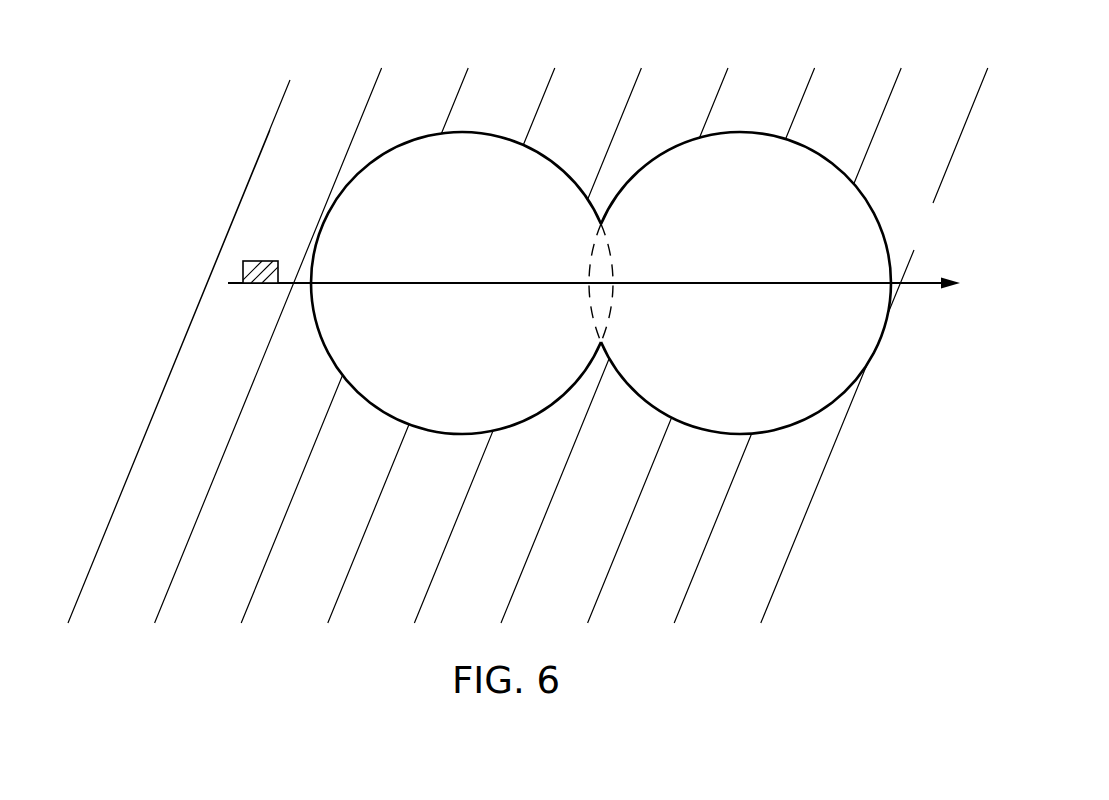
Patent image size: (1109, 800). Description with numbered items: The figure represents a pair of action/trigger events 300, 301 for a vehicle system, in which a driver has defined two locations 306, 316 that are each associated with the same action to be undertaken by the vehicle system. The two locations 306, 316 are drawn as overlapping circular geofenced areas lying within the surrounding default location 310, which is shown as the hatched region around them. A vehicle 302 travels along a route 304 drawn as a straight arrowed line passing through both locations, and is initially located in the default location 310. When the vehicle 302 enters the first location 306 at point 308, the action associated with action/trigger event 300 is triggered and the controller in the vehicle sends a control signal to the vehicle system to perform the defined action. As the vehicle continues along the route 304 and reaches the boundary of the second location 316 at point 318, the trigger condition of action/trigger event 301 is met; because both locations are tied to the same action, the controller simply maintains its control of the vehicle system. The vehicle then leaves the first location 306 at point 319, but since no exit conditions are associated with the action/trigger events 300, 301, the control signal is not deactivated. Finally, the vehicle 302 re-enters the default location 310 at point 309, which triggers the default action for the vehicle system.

The action/trigger event 300 is at (368, 136).
The action/trigger event 301 is at (651, 128).
The vehicle 302 is at (243, 273).
The route 304 is at (924, 283).
The location 306 is at (406, 241).
The point 308 is at (311, 286).
The point 309 is at (892, 286).
The default location 310 is at (565, 532).
The second location 316 is at (707, 229).
The point 318 is at (589, 286).
The point 319 is at (615, 286).